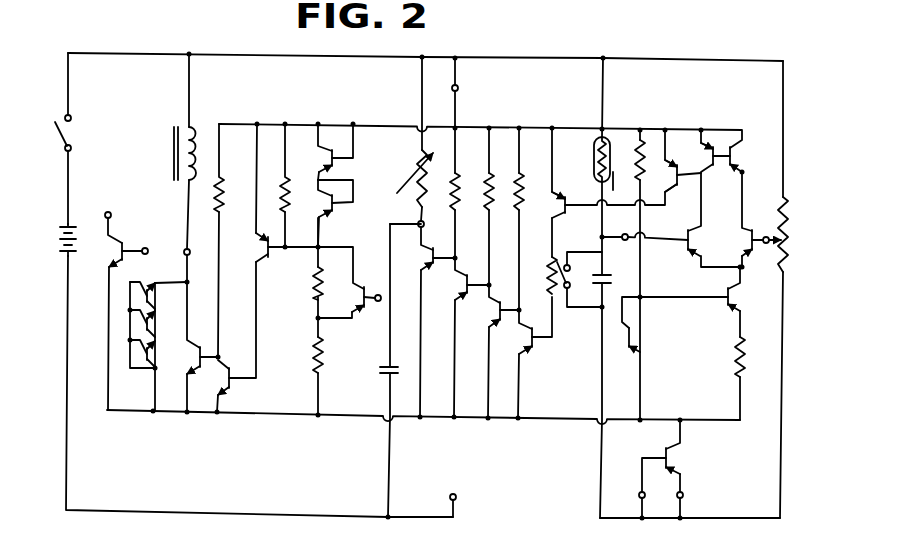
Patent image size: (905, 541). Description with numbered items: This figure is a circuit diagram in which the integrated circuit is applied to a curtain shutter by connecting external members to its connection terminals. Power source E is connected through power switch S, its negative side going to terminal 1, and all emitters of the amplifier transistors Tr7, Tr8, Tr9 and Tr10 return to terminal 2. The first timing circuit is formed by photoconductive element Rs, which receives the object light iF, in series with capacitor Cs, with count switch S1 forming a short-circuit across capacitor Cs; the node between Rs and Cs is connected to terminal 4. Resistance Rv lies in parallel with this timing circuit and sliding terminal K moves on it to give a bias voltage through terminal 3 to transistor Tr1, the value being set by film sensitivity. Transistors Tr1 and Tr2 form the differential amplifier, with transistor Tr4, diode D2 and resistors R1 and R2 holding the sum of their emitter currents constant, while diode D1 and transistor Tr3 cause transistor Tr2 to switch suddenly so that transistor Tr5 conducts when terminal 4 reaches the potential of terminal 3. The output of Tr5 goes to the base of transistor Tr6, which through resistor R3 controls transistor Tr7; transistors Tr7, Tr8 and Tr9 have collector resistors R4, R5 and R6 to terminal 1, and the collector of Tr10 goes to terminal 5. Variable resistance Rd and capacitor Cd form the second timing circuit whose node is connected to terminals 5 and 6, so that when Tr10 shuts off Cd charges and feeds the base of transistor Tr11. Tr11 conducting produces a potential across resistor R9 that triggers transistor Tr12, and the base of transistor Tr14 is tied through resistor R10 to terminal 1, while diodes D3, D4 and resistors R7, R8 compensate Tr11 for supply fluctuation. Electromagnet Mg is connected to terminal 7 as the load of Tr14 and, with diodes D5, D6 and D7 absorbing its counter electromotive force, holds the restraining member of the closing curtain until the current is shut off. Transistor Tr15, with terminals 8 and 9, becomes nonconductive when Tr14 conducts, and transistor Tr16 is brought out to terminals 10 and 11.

The external connection terminal 1 is at (458, 88).
The external connection terminal 2 is at (456, 498).
The external connection terminal 3 is at (763, 243).
The external connection terminal 4 is at (623, 228).
The external connection terminal 5 is at (418, 227).
The external connection terminal 6 is at (374, 288).
The external connection terminal 7 is at (189, 255).
The external connection terminal 8 is at (147, 254).
The external connection terminal 9 is at (105, 215).
The external connection terminal 10 is at (641, 492).
The external connection terminal 11 is at (678, 492).
The power switch S is at (70, 138).
The electric power source E is at (70, 228).
The electromagnet Mg is at (172, 130).
The count switch S1 is at (579, 279).
The transistor Tr1 is at (750, 237).
The transistor Tr2 is at (696, 254).
The transistor Tr3 is at (713, 146).
The transistor Tr4 is at (734, 308).
The transistor Tr5 is at (683, 158).
The transistor Tr6 is at (568, 197).
The transistor Tr7 is at (532, 350).
The transistor Tr8 is at (497, 328).
The transistor Tr9 is at (476, 305).
The transistor Tr10 is at (432, 270).
The transistor Tr11 is at (358, 311).
The transistor Tr12 is at (272, 258).
The transistor Tr14 is at (198, 368).
The transistor Tr15 is at (134, 236).
The transistor Tr16 is at (674, 458).
The diode D1 is at (733, 156).
The diode D2 is at (635, 338).
The diode D3 is at (340, 160).
The diode D4 is at (334, 212).
The diode D5 is at (135, 299).
The diode D6 is at (130, 312).
The diode D7 is at (130, 343).
The resistor R1 is at (742, 368).
The resistor R2 is at (638, 180).
The resistor R3 is at (553, 266).
The resistor R4 is at (521, 210).
The resistor R5 is at (491, 210).
The resistor R6 is at (459, 210).
The resistor R7 is at (321, 274).
The resistor R8 is at (321, 356).
The resistor R9 is at (288, 186).
The resistor R10 is at (222, 186).
The variable resistance Rd is at (408, 181).
The photoconductive element Rs is at (594, 156).
The resistance Rv is at (780, 212).
The sliding terminal K is at (766, 228).
The capacitor Cs is at (612, 270).
The capacitor Cd is at (392, 375).
The object light iF is at (620, 163).